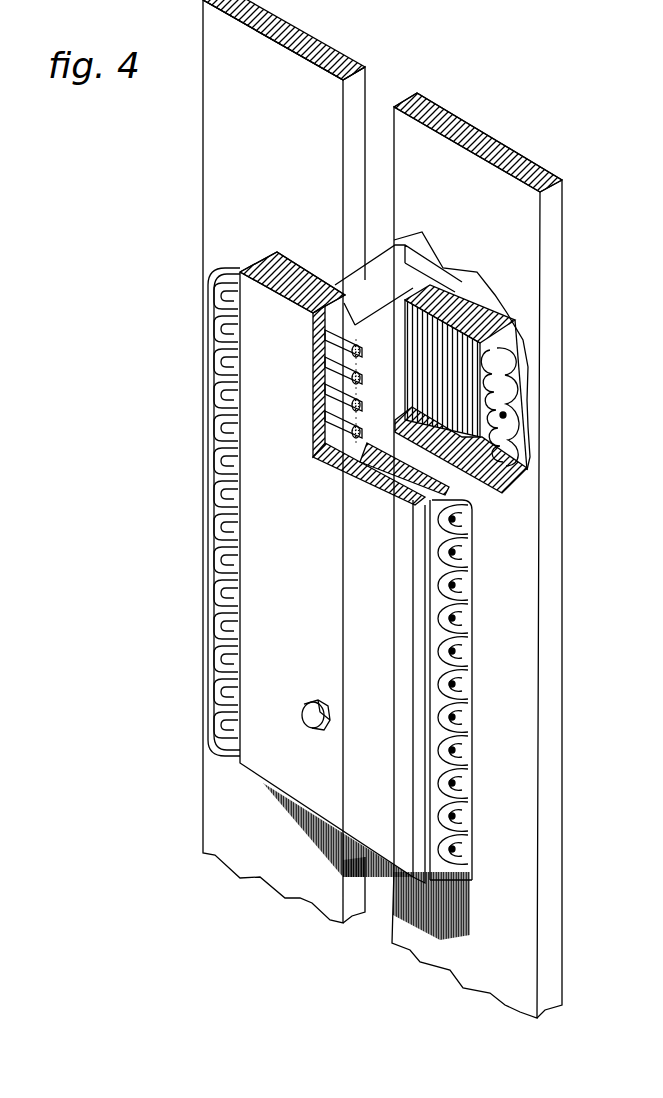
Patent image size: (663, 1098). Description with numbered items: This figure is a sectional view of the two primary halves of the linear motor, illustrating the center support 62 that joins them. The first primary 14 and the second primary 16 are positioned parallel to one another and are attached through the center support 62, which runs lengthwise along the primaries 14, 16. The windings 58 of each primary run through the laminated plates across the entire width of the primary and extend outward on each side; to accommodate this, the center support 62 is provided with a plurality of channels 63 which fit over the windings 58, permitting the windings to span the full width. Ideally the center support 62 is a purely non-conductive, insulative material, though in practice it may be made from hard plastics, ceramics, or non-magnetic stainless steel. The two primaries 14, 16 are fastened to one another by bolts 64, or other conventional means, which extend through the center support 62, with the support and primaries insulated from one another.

The first primary 14 is at (262, 313).
The second primary 16 is at (448, 290).
The windings 58 is at (340, 378).
The center support 62 is at (400, 290).
The channels 63 is at (365, 430).
The bolts 64 is at (305, 718).